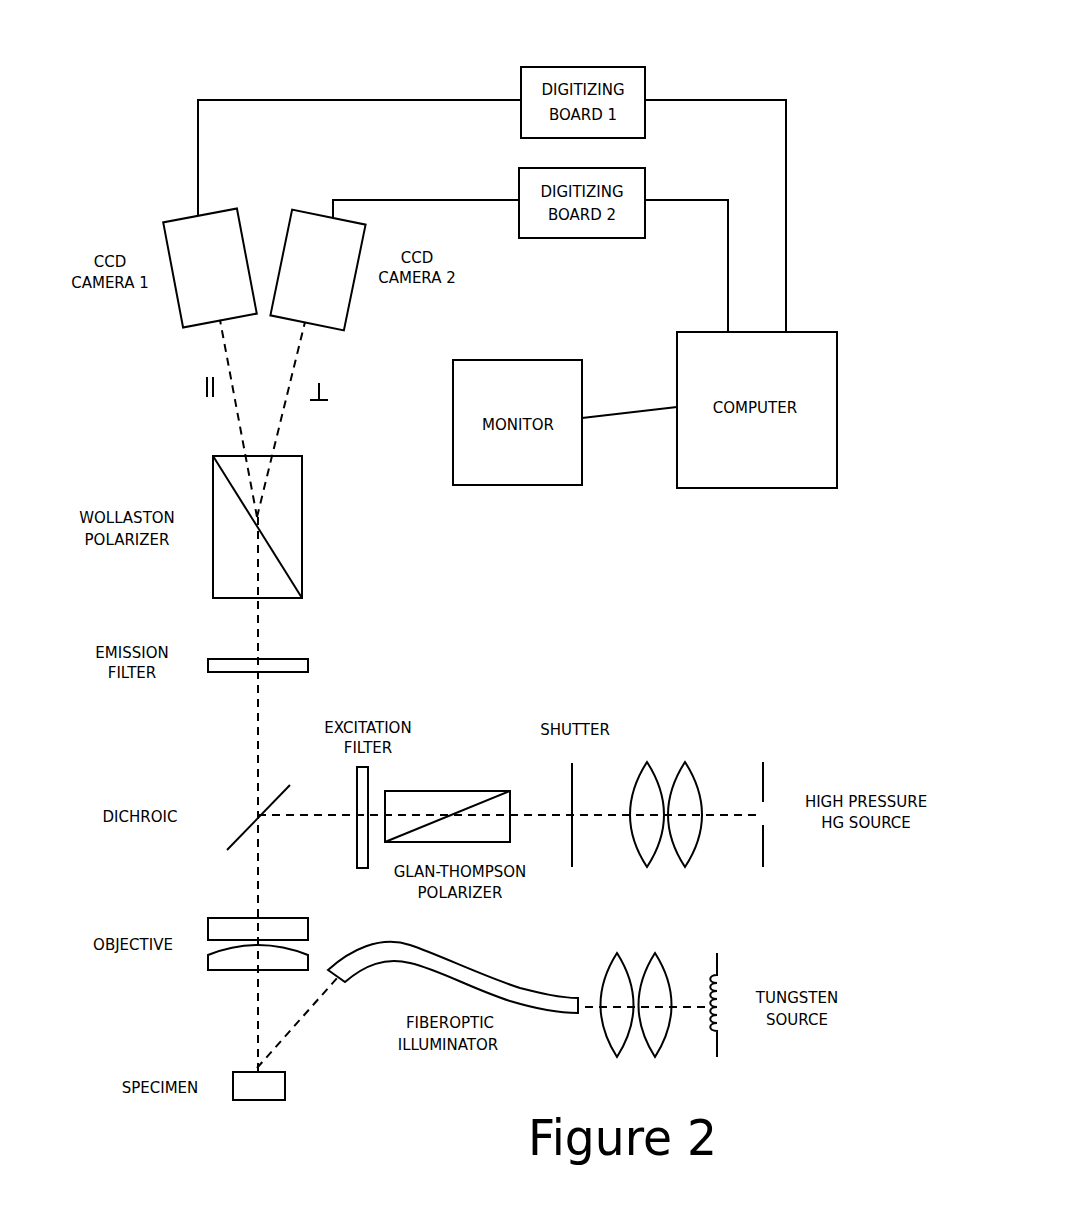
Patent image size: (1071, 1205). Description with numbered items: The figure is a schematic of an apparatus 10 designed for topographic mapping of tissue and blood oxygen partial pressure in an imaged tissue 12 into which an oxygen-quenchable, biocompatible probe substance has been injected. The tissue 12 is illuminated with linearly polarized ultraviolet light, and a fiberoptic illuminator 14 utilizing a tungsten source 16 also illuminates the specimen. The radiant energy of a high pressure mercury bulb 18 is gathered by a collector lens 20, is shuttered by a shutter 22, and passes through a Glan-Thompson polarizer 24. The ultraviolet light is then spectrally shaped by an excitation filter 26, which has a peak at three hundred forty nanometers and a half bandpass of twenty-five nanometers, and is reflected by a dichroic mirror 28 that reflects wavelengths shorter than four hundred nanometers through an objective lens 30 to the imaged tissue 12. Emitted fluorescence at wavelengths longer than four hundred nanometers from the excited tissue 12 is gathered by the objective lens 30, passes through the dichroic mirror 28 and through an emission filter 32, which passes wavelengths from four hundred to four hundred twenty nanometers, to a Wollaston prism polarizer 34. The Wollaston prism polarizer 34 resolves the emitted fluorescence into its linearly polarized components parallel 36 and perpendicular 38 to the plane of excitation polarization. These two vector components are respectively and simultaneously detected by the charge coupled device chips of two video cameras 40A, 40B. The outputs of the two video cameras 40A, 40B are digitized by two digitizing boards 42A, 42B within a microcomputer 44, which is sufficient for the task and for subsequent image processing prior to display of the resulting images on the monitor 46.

The apparatus 10 is at (589, 593).
The tissue 12 is at (263, 1090).
The fiberoptic illuminator 14 is at (457, 970).
The tungsten source 16 is at (723, 960).
The high pressure mercury bulb 18 is at (765, 772).
The collector lens 20 is at (663, 758).
The shutter 22 is at (583, 857).
The Glan-Thompson polarizer 24 is at (447, 787).
The excitation filter 26 is at (353, 850).
The dichroic mirror 28 is at (230, 837).
The objective lens 30 is at (207, 948).
The emission filter 32 is at (308, 665).
The Wollaston prism polarizer 34 is at (293, 533).
The parallel component 36 is at (237, 413).
The perpendicular component 38 is at (288, 412).
The video camera 40A is at (210, 267).
The video camera 40B is at (317, 270).
The digitizing board 42A is at (608, 72).
The digitizing board 42B is at (582, 232).
The microcomputer 44 is at (757, 410).
The monitor 46 is at (517, 422).